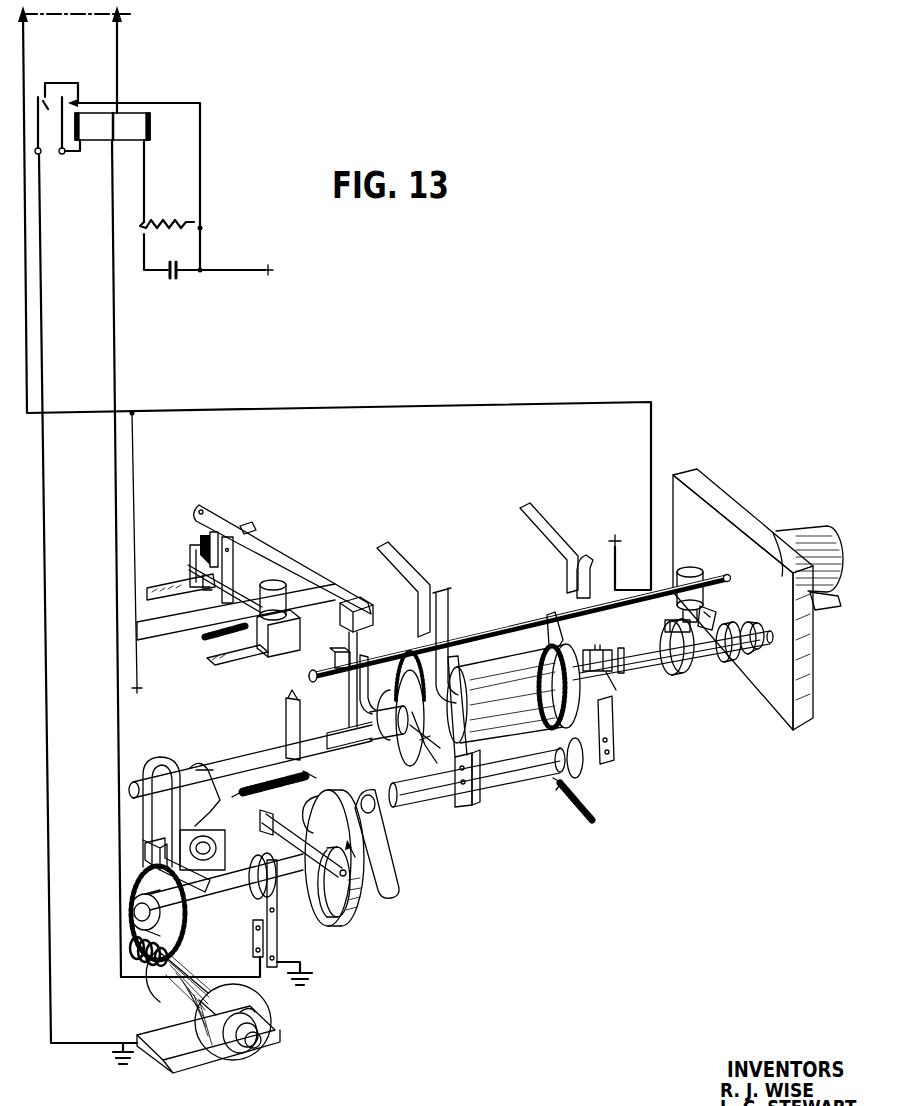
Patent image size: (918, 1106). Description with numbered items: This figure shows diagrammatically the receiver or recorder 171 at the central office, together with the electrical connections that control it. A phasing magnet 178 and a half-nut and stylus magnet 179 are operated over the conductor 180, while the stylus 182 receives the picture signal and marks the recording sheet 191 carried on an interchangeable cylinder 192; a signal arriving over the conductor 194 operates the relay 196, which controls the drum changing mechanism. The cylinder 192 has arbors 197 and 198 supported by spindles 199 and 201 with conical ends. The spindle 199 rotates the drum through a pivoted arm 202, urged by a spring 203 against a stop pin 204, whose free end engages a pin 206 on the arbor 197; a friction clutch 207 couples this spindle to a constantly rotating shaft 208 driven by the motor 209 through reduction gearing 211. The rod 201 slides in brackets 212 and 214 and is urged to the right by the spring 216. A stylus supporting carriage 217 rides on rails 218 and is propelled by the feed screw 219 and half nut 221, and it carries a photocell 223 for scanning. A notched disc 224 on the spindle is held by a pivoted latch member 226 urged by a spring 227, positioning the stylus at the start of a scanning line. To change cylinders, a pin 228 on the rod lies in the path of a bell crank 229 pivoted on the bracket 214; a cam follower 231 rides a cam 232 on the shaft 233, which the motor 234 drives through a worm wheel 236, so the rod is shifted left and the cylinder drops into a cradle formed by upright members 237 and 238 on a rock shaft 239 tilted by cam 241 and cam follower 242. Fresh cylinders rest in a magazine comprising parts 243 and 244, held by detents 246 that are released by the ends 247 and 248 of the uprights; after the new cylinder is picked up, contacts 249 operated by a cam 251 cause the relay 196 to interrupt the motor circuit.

The receiver 171 is at (533, 830).
The phasing magnet 178 is at (692, 572).
The half-nut and stylus magnet 179 is at (286, 600).
The conductor 180 is at (23, 47).
The stylus 182 is at (376, 640).
The recording sheet 191 is at (513, 693).
The cylinder 192 is at (494, 758).
The conductor 194 is at (117, 47).
The relay 196 is at (100, 145).
The arbor 197 is at (612, 712).
The arbor 198 is at (372, 712).
The spindle 199 is at (712, 660).
The spindle (rod) 201 is at (290, 720).
The pivoted arm 202 is at (622, 675).
The spring 203 is at (616, 690).
The stop pin 204 is at (597, 648).
The pin 206 is at (512, 686).
The friction clutch 207 is at (738, 664).
The shaft 208 is at (768, 648).
The motor 209 is at (800, 524).
The reduction gearing 211 is at (740, 518).
The bracket 212 is at (287, 700).
The bracket 214 is at (156, 760).
The spring 216 is at (245, 785).
The stylus supporting carriage 217 is at (235, 602).
The rails 218 is at (192, 582).
The feed screw 219 is at (500, 630).
The half nut 221 is at (336, 660).
The photocell 223 is at (205, 637).
The notched disc 224 is at (683, 672).
The pivoted latch member 226 is at (665, 627).
The spring 227 is at (714, 610).
The pin 228 is at (188, 766).
The bell crank 229 is at (212, 826).
The cam follower 231 is at (340, 922).
The cam 232 is at (343, 875).
The shaft 233 is at (205, 898).
The motor 234 is at (215, 1058).
The worm wheel 236 is at (172, 933).
The upright member 237 is at (415, 800).
The upright member 238 is at (592, 772).
The rock shaft 239 is at (500, 775).
The cam 241 is at (372, 912).
The cam follower 242 is at (400, 862).
The magazine part 243 is at (533, 527).
The magazine part 244 is at (445, 592).
The detent 246 is at (428, 728).
The end of upright member 247 is at (358, 664).
The end of upright member 248 is at (552, 616).
The contacts 249 is at (275, 950).
The cam 251 is at (282, 907).